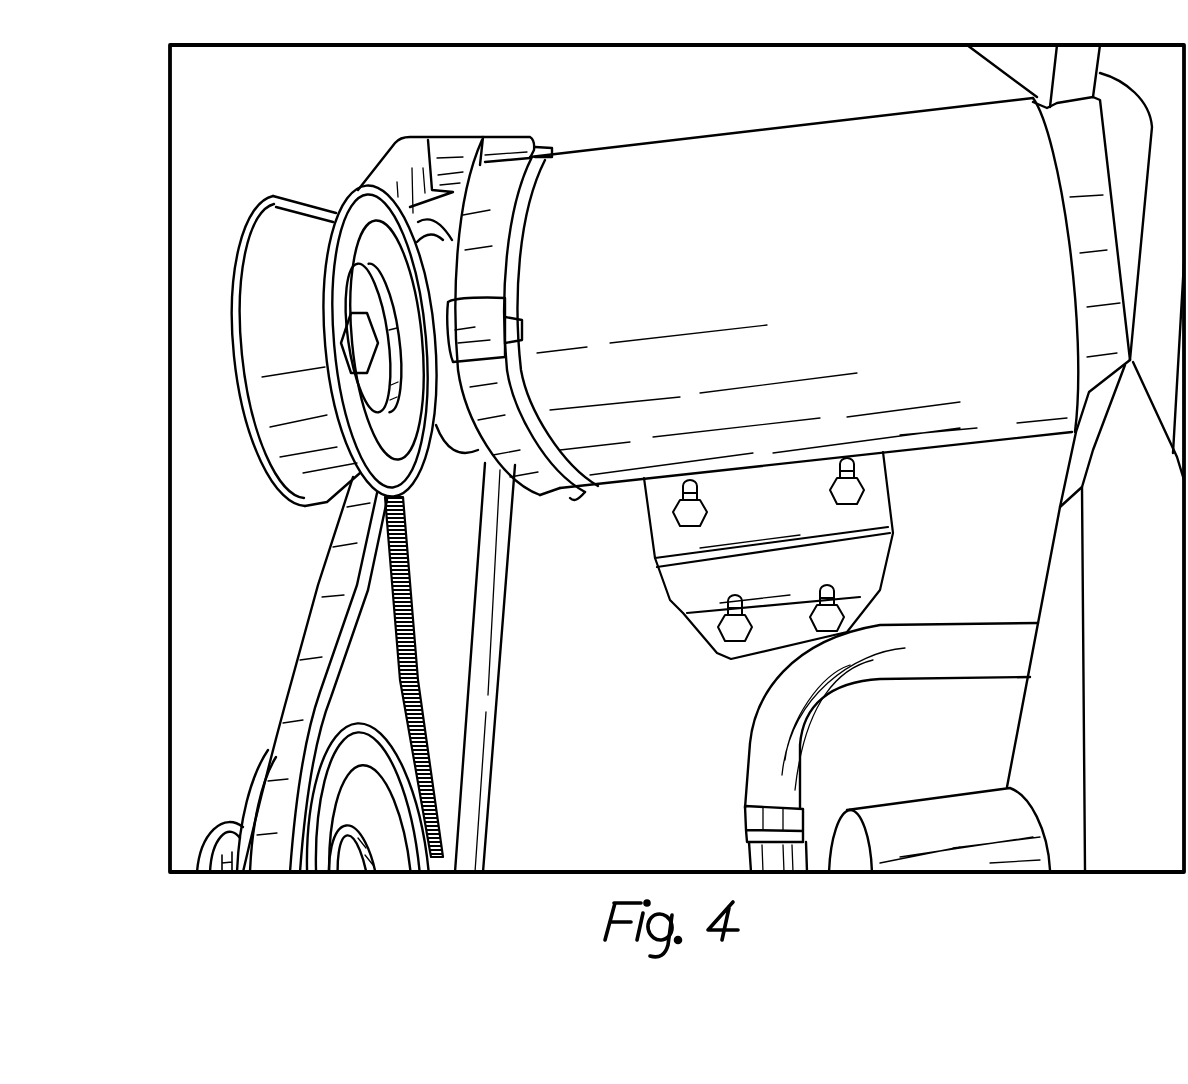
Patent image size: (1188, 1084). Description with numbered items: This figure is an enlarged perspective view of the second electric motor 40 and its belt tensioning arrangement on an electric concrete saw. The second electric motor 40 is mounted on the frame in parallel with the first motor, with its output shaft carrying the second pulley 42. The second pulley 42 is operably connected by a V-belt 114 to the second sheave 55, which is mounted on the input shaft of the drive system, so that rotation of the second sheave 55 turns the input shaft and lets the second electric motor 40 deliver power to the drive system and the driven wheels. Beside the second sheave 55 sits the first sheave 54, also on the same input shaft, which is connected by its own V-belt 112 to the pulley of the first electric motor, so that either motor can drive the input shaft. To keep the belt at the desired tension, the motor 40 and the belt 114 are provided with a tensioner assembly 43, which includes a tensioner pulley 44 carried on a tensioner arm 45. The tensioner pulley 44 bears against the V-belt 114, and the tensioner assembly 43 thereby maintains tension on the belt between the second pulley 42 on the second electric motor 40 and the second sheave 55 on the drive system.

The second electric motor 40 is at (747, 147).
The second pulley 42 is at (460, 423).
The tensioner assembly 43 is at (247, 150).
The tensioner pulley 44 is at (270, 472).
The tensioner arm 45 is at (403, 180).
The first sheave 54 is at (172, 861).
The second sheave 55 is at (247, 770).
The V-belt 112 is at (227, 863).
The V-belt 114 is at (313, 640).